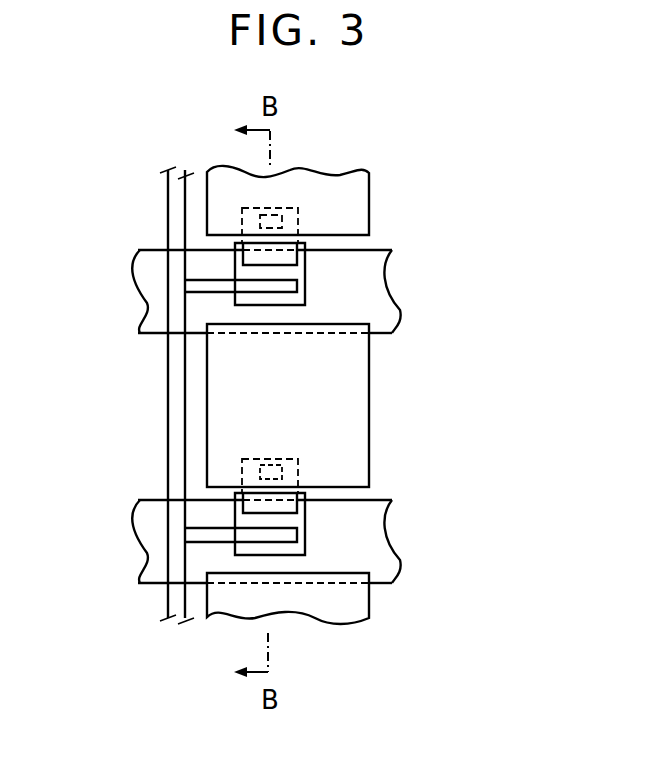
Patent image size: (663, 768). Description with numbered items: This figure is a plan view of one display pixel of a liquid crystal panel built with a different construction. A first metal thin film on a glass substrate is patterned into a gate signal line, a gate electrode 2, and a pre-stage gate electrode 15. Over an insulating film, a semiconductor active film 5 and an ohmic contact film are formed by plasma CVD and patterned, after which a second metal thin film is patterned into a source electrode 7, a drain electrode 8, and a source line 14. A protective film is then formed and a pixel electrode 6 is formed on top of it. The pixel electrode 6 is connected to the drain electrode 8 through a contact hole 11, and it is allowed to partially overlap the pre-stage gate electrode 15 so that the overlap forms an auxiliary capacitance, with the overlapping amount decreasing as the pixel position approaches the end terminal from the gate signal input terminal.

The gate electrode 2 is at (375, 540).
The semiconductor active film 5 is at (297, 520).
The pixel electrode 6 is at (228, 443).
The source electrode 7 is at (220, 535).
The drain electrode 8 is at (297, 472).
The contact hole 11 is at (273, 461).
The source line 14 is at (177, 390).
The pre-stage gate electrode 15 is at (368, 293).